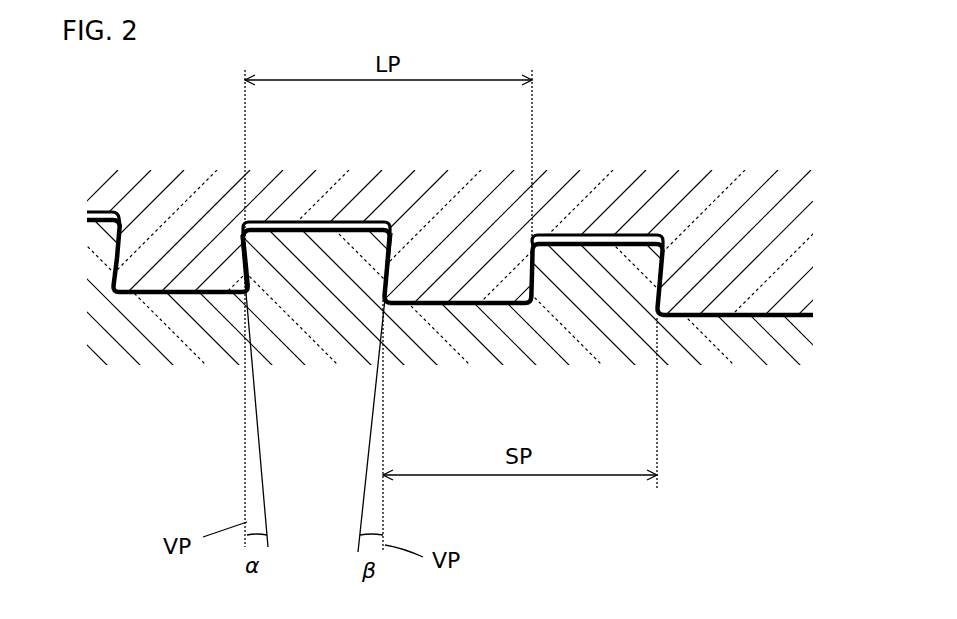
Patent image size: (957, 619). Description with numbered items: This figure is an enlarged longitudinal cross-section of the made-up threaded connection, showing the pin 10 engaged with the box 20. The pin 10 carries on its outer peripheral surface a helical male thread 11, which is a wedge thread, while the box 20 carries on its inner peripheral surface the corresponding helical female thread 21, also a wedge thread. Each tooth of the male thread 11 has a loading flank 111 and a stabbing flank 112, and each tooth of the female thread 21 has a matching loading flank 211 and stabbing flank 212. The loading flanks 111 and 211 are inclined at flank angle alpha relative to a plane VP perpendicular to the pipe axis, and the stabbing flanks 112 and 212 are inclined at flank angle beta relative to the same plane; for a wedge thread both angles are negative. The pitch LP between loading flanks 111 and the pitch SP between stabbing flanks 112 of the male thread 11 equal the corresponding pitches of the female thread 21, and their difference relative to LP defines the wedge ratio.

The pin 10 is at (165, 383).
The male thread 11 is at (310, 263).
The loading flank 111 is at (238, 280).
The stabbing flank 112 is at (125, 290).
The box 20 is at (776, 157).
The female thread 21 is at (180, 250).
The loading flank 211 is at (272, 228).
The stabbing flank 212 is at (119, 248).